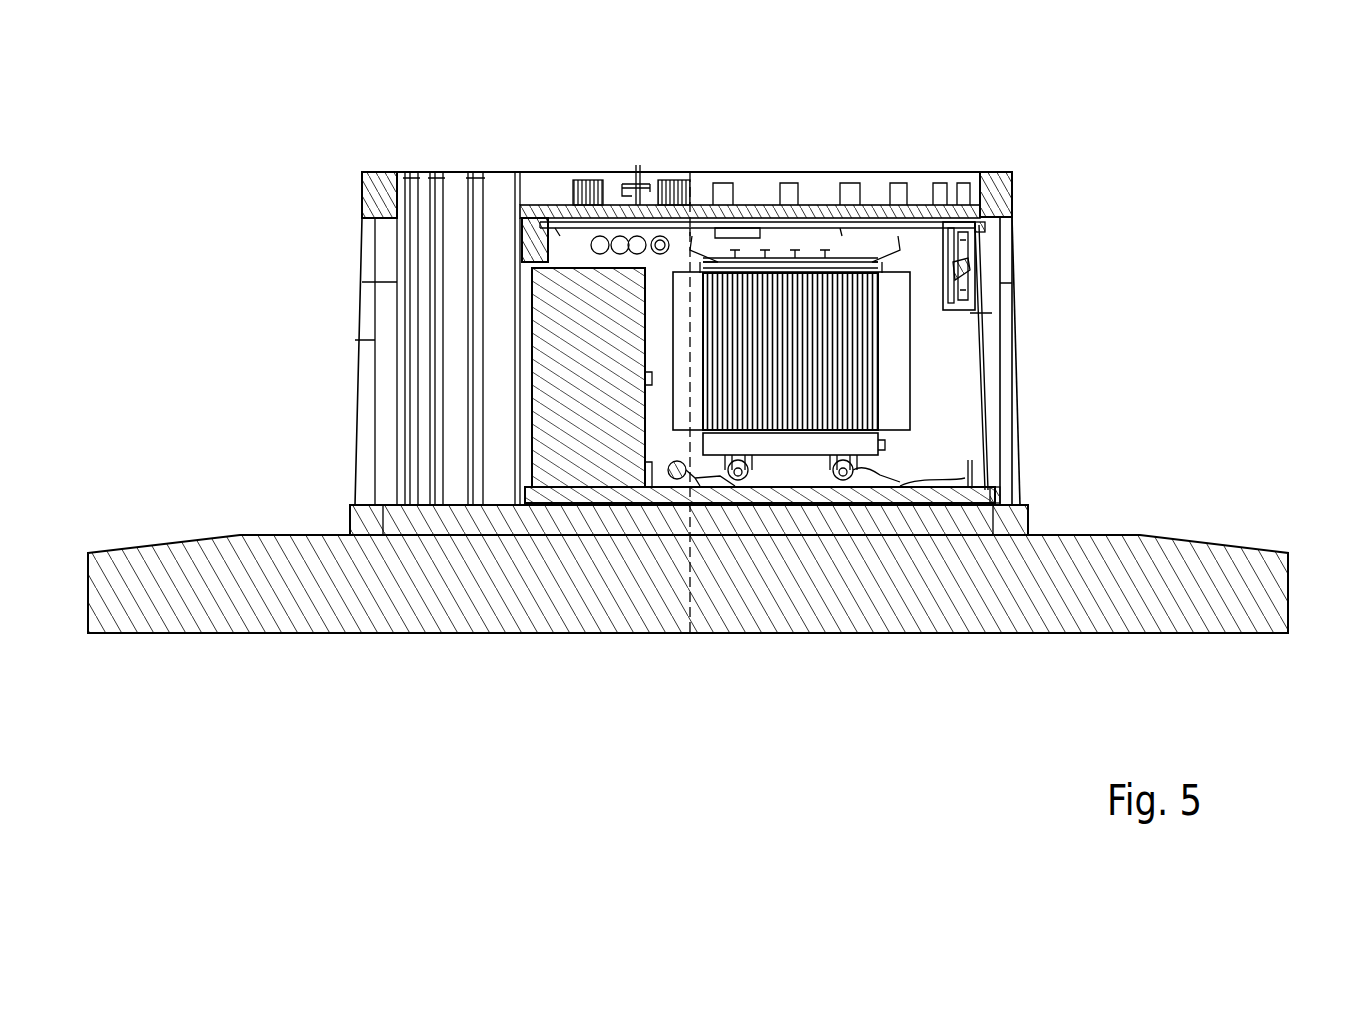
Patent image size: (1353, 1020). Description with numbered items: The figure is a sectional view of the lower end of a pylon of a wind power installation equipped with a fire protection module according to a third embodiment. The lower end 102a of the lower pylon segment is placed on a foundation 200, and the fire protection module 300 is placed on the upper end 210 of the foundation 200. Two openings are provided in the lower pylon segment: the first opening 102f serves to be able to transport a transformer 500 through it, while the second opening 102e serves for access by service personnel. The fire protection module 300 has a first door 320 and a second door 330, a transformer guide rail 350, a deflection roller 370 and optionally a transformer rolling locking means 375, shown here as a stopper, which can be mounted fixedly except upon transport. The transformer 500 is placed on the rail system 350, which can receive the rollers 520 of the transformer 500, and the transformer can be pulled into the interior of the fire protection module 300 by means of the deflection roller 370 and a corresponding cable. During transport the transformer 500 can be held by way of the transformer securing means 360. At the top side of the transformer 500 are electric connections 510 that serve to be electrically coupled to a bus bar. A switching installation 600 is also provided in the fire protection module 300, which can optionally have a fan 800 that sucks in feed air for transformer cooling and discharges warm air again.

The foundation 200 is at (1275, 602).
The lower end of the lower pylon segment 102a is at (995, 195).
The second opening 102e is at (365, 232).
The first opening 102f is at (1003, 268).
The fire protection module 300 is at (522, 280).
The switching installation 600 is at (552, 250).
The electric connections 510 is at (755, 245).
The transformer 500 is at (858, 262).
The transformer securing means 360 is at (905, 218).
The fan 800 is at (980, 258).
The second door 330 is at (362, 342).
The first door 320 is at (1005, 422).
The transformer guide rail 350 is at (985, 472).
The deflection roller 370 is at (672, 480).
The transformer rolling locking means 375 is at (850, 480).
The rollers 520 is at (870, 472).
The upper end of the foundation 210 is at (960, 503).